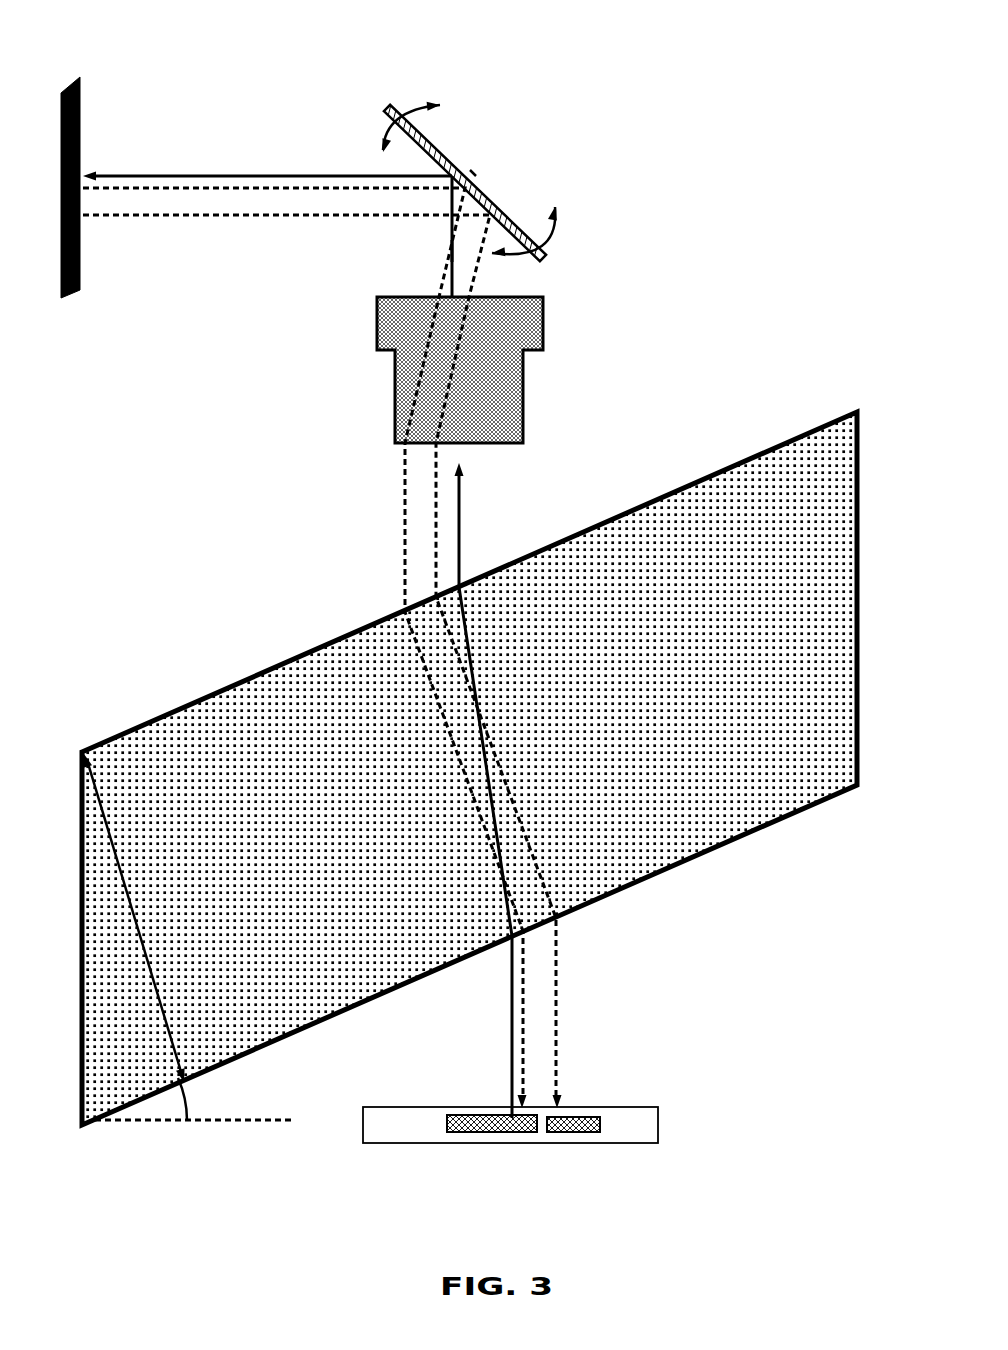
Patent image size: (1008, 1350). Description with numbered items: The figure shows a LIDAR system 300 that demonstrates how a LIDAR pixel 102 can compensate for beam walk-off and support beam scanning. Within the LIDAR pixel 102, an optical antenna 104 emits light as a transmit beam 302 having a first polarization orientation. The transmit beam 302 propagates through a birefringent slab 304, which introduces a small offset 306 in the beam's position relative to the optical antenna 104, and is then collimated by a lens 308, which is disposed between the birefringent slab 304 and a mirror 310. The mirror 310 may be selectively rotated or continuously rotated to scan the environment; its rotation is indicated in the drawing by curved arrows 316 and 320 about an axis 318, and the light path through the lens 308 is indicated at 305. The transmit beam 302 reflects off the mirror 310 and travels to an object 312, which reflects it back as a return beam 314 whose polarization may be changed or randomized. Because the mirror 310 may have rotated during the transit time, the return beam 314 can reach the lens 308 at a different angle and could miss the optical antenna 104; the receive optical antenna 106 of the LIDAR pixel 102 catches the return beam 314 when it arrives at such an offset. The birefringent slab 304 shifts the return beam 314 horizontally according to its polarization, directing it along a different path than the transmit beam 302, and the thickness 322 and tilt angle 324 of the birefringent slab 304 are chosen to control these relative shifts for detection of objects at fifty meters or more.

The LIDAR system 300 is at (791, 25).
The transmit beam 302 is at (222, 175).
The birefringent slab 304 is at (740, 460).
The optical axis 305 is at (450, 250).
The offset 306 is at (470, 530).
The lens 308 is at (543, 332).
The mirror 310 is at (523, 220).
The object 312 is at (83, 88).
The return beam 314 is at (435, 567).
The second rotation direction 316 is at (460, 160).
The mirror pivot axis 318 is at (480, 180).
The first rotation direction 320 is at (440, 137).
The thickness 322 is at (150, 953).
The angle 324 is at (192, 1097).
The LIDAR pixel 102 is at (660, 1117).
The optical antenna 104 is at (513, 1132).
The receive optical antenna 106 is at (602, 1123).